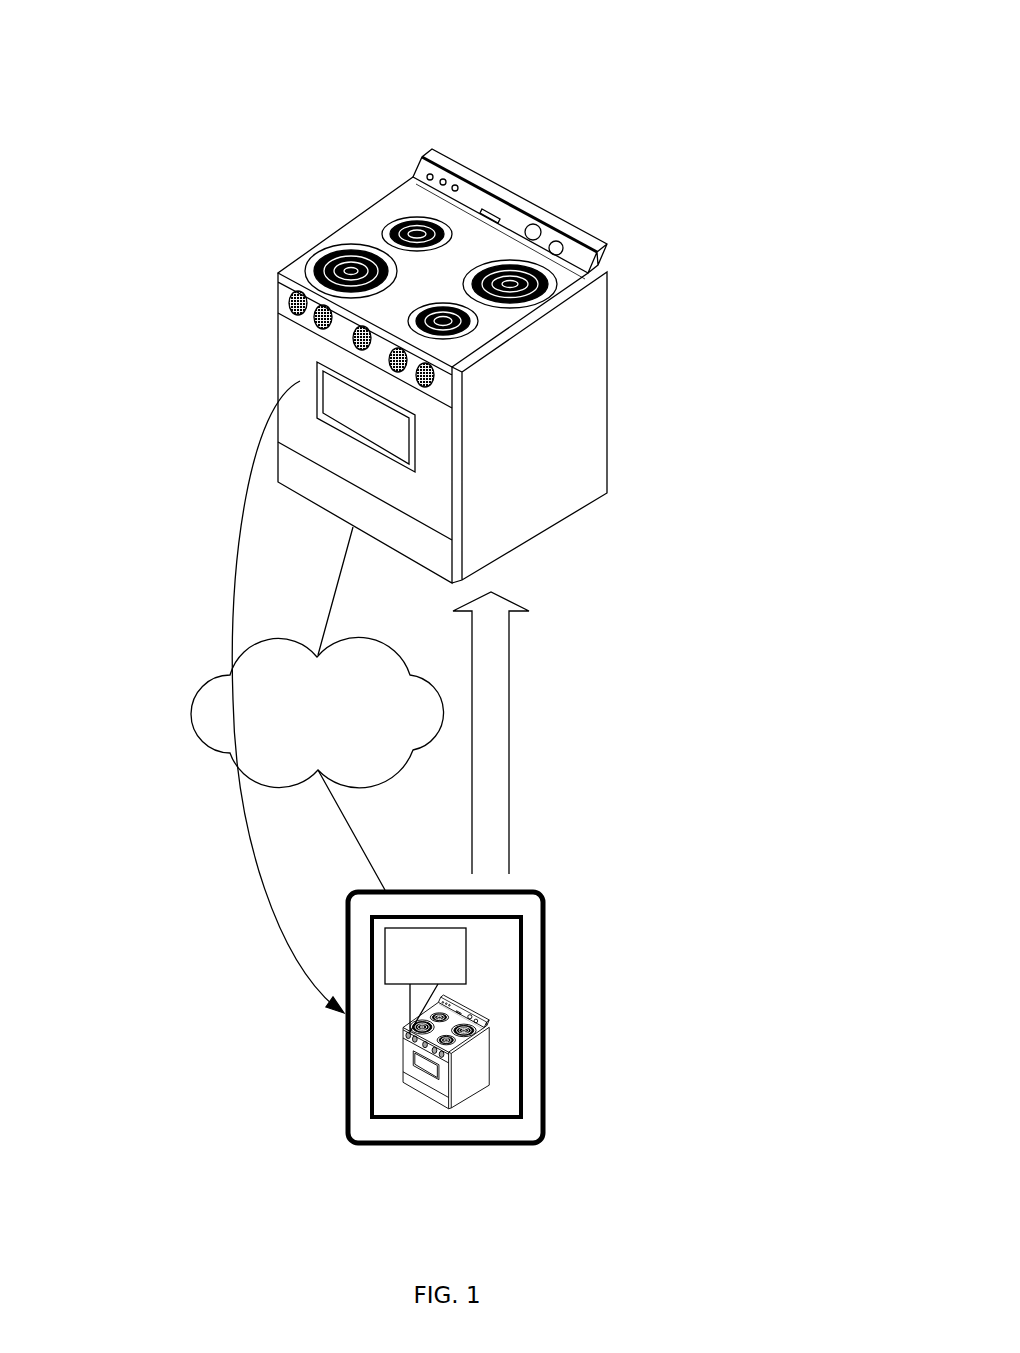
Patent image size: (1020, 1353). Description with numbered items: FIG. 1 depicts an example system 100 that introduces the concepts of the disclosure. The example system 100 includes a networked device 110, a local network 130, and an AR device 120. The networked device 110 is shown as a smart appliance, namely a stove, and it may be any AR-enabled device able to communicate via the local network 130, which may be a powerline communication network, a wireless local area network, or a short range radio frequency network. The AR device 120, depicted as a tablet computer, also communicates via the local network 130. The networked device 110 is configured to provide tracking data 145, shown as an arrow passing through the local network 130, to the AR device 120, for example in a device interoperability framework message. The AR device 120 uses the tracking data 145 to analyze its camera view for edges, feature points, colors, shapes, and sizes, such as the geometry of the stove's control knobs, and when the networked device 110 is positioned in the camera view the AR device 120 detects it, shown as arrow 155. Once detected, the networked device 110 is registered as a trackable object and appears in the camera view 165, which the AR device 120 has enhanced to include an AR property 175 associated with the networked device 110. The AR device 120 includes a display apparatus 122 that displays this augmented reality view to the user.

The example system 100 is at (137, 17).
The networked device 110 is at (453, 161).
The AR device 120 is at (413, 886).
The display apparatus 122 is at (518, 928).
The local network 130 is at (377, 642).
The tracking data 145 is at (237, 585).
The detection of networked device 155 is at (509, 815).
The camera view 165 is at (403, 1051).
The AR property 175 is at (466, 969).